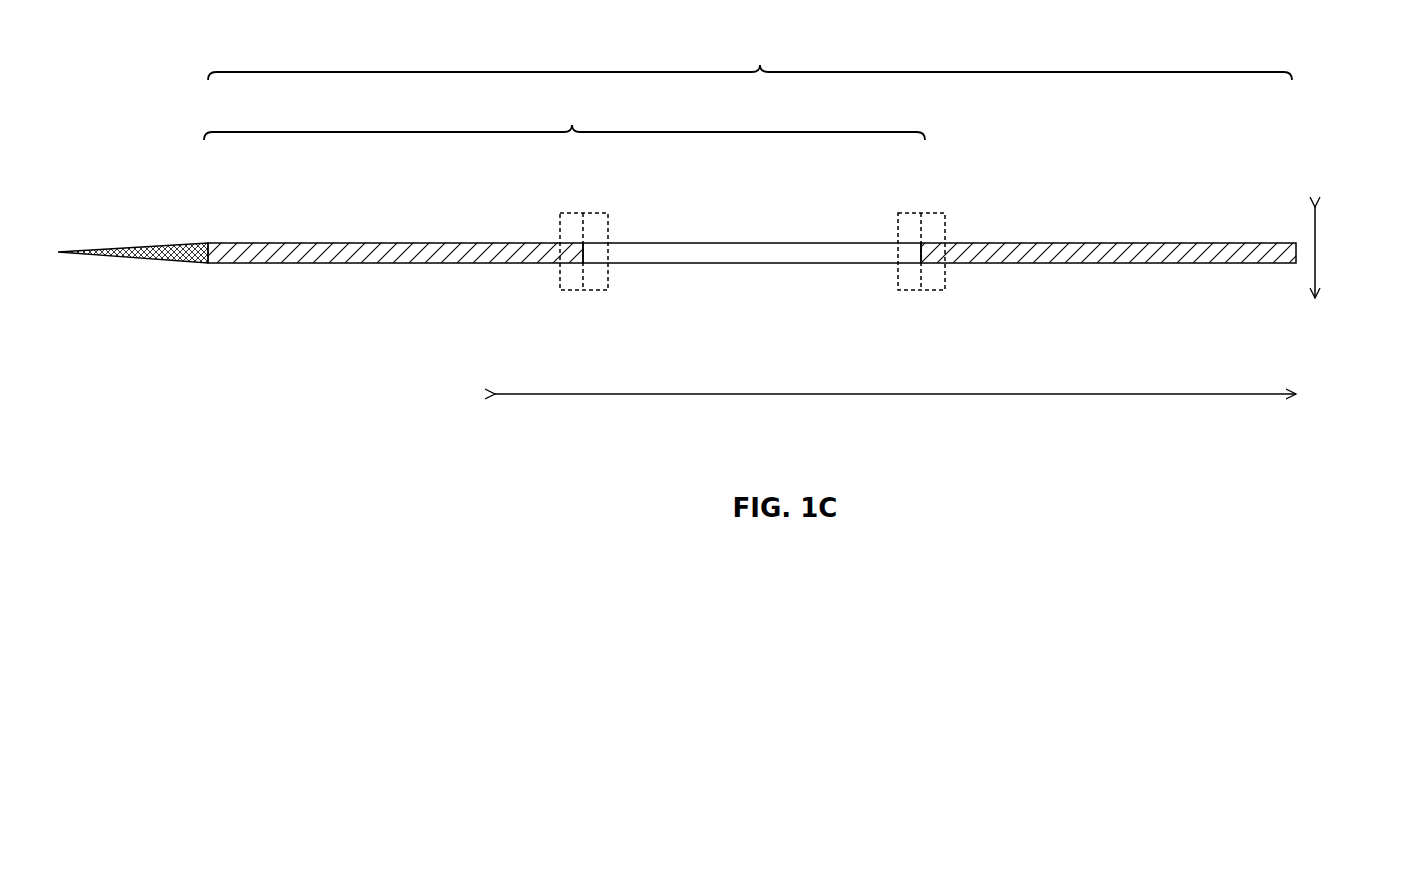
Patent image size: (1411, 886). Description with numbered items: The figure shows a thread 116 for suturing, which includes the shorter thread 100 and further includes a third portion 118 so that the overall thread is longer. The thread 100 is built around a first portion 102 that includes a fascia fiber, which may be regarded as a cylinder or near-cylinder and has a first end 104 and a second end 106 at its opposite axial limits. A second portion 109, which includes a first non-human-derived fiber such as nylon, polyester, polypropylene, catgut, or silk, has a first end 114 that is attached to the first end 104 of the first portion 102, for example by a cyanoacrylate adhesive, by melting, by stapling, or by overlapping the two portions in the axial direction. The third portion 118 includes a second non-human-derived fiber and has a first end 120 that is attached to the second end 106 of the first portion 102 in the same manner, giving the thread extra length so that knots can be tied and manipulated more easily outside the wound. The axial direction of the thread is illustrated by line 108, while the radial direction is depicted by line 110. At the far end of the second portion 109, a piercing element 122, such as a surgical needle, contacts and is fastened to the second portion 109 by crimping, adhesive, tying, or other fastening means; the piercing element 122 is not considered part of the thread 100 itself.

The thread 100 is at (564, 114).
The first portion 102 is at (673, 243).
The first end 104 is at (595, 213).
The second end 106 is at (913, 290).
The line 108 is at (962, 395).
The second portion 109 is at (322, 243).
The line 110 is at (1316, 253).
The first end 114 is at (573, 290).
The thread 116 is at (750, 55).
The third portion 118 is at (1182, 243).
The first end 120 is at (935, 213).
The piercing element 122 is at (150, 243).